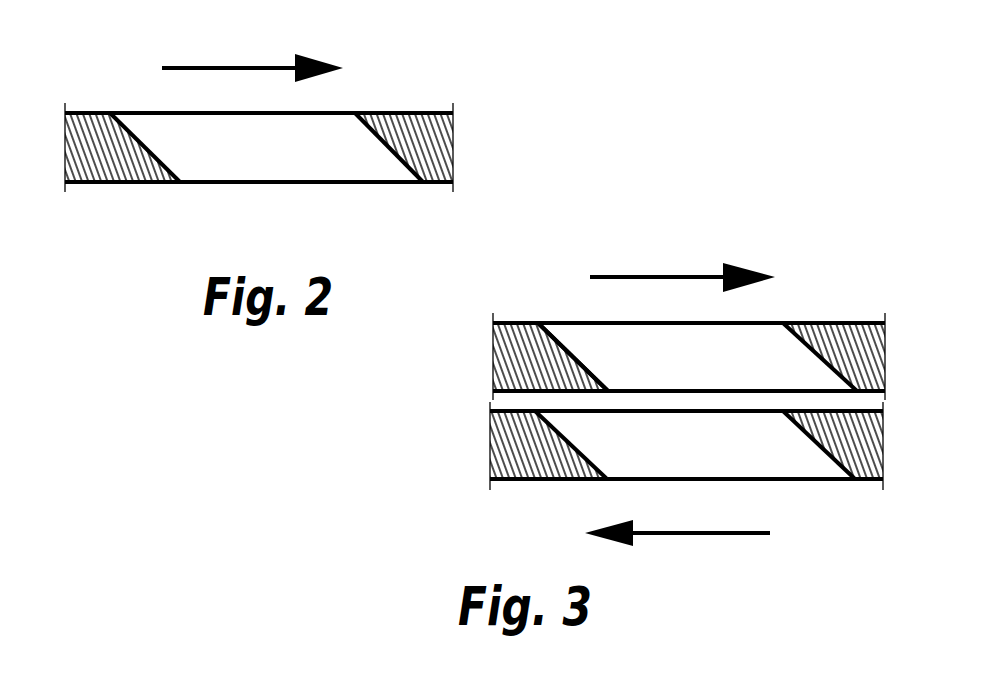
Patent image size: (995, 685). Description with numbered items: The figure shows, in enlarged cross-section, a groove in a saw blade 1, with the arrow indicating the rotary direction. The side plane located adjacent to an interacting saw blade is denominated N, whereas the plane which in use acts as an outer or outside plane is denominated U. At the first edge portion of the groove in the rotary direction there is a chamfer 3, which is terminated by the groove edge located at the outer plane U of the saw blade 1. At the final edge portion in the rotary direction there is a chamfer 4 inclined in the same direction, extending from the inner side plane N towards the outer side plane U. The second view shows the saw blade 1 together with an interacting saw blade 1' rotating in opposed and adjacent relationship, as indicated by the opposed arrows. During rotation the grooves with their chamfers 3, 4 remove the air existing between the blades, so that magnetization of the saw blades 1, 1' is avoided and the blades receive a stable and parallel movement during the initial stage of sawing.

In FIG. 3, the saw blade 1 is at (496, 357).
In FIG. 3, the interacting saw blade 1' is at (494, 484).
In FIG. 2, the chamfer 3 is at (380, 143).
In FIG. 3, the chamfer 3 is at (567, 440).
In FIG. 2, the chamfer 4 is at (138, 135).
In FIG. 3, the chamfer 4 is at (573, 355).
In FIG. 2, the outer plane U is at (402, 112).
In FIG. 2, the inner plane N is at (112, 182).